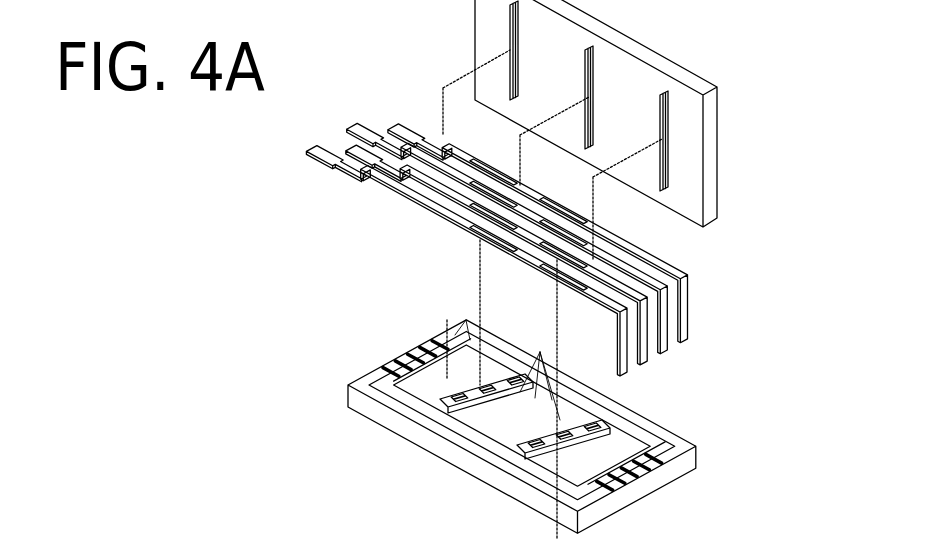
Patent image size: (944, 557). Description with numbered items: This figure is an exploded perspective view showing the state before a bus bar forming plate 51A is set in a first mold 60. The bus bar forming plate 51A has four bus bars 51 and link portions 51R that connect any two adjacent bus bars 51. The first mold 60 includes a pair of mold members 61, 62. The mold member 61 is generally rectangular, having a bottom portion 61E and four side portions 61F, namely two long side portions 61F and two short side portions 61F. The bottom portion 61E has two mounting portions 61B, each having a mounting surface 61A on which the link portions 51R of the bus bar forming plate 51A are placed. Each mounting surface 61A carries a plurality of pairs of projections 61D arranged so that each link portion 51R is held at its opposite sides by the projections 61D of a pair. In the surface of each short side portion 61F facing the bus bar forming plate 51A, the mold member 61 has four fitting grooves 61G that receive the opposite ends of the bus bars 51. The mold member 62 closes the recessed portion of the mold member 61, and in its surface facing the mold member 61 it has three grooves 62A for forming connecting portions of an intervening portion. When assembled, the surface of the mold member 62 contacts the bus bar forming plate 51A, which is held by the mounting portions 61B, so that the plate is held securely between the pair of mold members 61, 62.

The first mold 60 is at (757, 262).
The mold member 62 is at (622, 143).
The grooves 62A is at (518, 32).
The bus bars 51 is at (506, 251).
The bus bar forming plate 51A is at (630, 233).
The link portions 51R is at (505, 178).
The mold member 61 is at (542, 426).
The mounting surface 61A is at (490, 449).
The mounting portions 61B is at (478, 442).
The projections 61D is at (466, 320).
The bottom portion 61E is at (410, 395).
The side portions 61F is at (353, 378).
The fitting grooves 61G is at (415, 345).